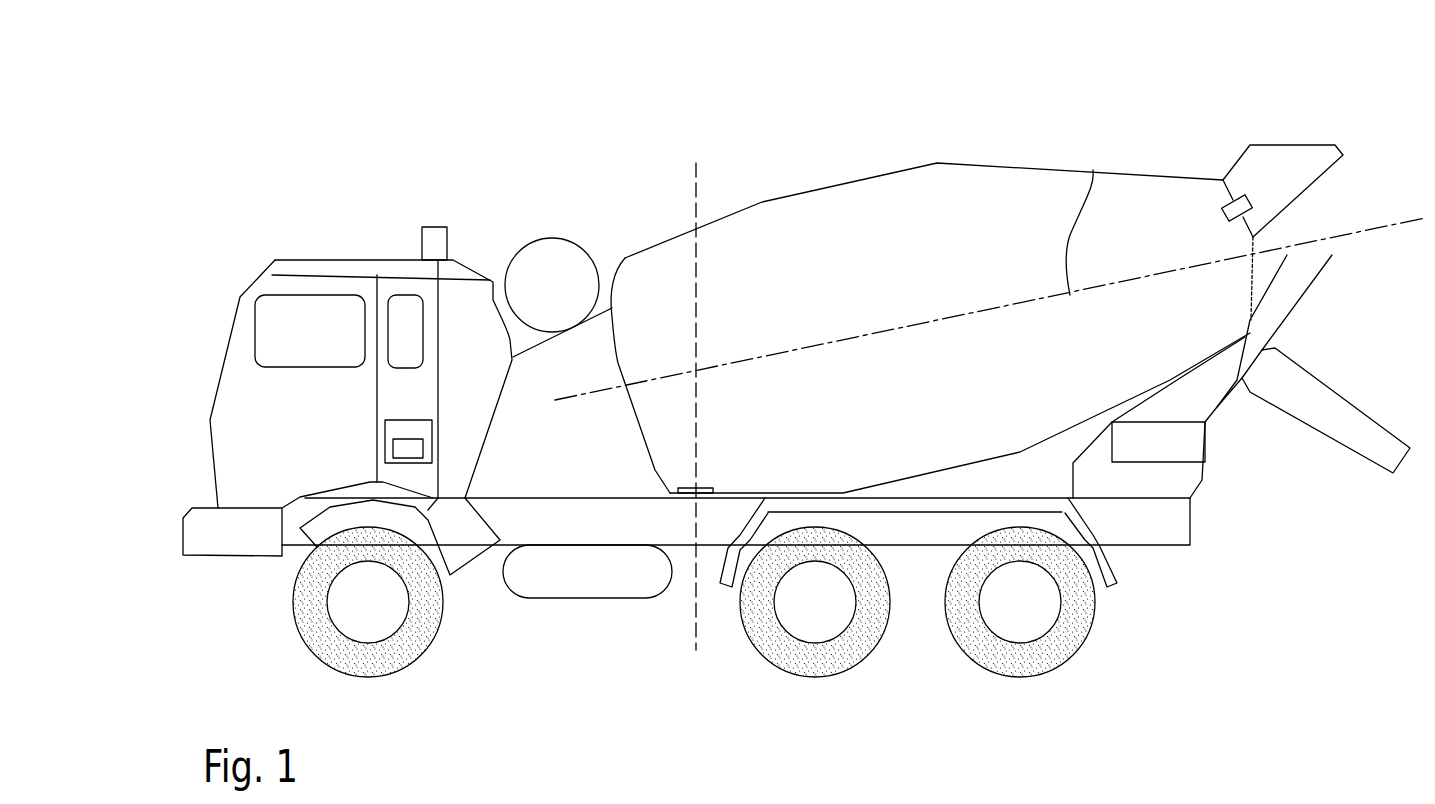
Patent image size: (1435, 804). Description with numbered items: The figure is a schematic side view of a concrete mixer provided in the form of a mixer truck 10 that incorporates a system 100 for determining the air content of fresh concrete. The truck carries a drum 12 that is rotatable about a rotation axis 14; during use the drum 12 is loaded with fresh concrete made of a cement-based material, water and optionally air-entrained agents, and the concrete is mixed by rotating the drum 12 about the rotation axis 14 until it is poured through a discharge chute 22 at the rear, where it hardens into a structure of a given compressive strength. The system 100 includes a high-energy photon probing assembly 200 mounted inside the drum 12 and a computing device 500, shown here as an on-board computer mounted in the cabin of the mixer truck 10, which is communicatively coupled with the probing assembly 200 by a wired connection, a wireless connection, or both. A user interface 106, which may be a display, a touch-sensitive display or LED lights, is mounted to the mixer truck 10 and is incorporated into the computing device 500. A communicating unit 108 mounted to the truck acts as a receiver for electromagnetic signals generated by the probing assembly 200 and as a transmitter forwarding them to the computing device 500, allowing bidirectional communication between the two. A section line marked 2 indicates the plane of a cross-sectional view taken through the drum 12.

The system 100 is at (1207, 592).
The mixer truck 10 is at (255, 283).
The drum 12 is at (955, 163).
The rotation axis 14 is at (1093, 170).
The discharge chute 22 is at (1322, 398).
The user interface 106 is at (390, 448).
The computing device 500 is at (385, 435).
The communicating unit 108 is at (1207, 440).
The high-energy photon probing assembly 200 is at (687, 498).
The section line 2- 2 is at (737, 650).